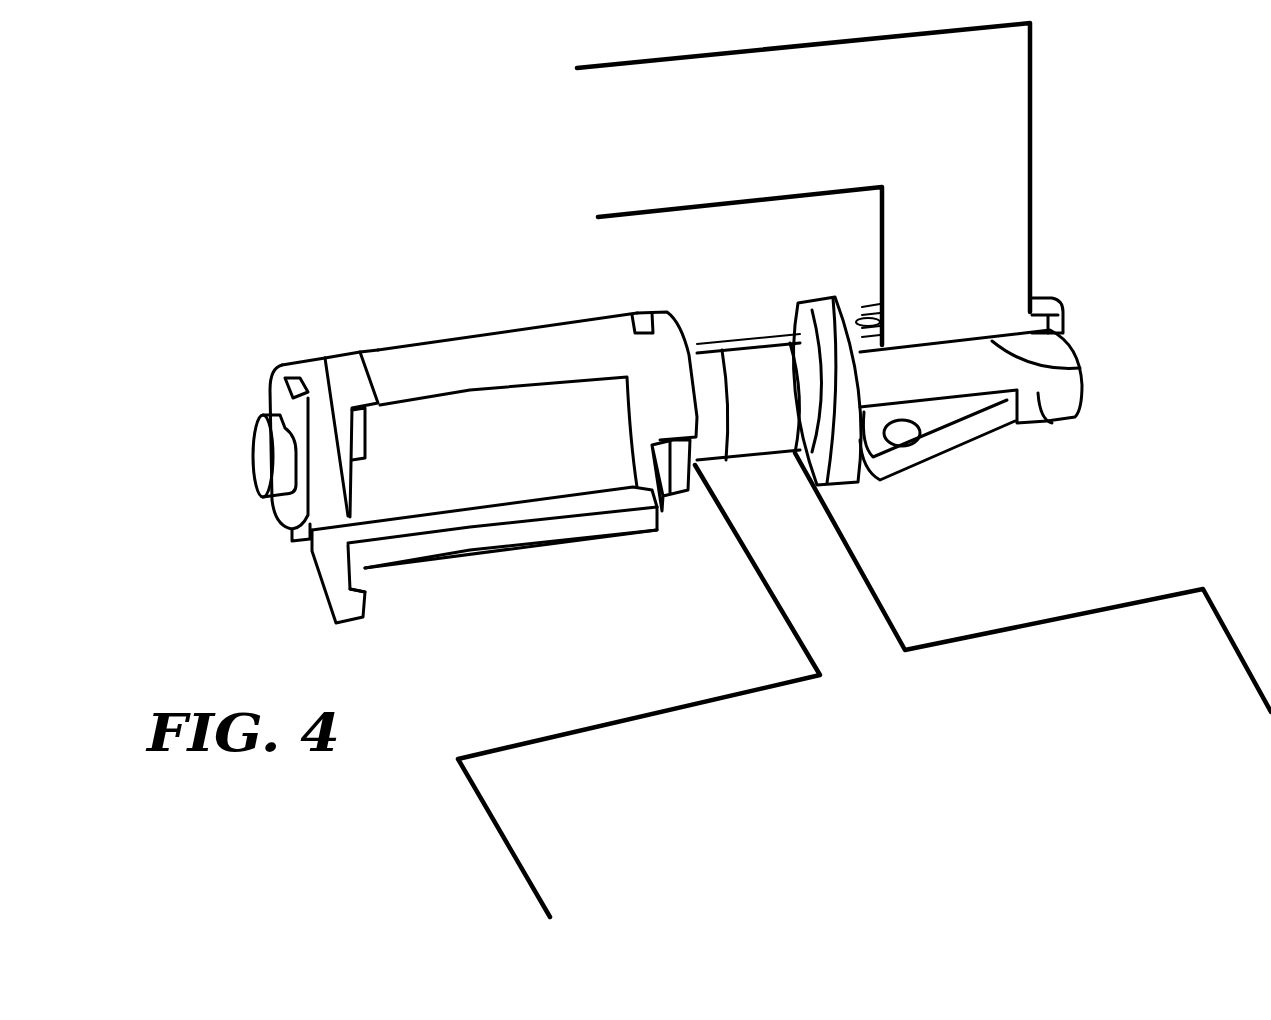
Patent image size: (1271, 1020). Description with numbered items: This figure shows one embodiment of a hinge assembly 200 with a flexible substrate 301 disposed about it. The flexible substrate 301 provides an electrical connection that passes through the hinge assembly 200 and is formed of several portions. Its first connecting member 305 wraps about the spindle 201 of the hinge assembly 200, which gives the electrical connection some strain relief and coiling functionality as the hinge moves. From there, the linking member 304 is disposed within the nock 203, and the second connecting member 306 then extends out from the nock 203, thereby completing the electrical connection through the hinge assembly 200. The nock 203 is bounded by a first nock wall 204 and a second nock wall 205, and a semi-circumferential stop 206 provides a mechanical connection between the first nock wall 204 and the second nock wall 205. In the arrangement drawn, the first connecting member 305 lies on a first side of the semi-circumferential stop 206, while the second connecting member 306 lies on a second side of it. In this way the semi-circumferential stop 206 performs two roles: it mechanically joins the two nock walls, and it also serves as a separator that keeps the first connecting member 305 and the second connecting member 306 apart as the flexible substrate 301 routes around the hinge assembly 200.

The hinge assembly 200 is at (335, 310).
The spindle 201 is at (970, 463).
The nock 203 is at (995, 340).
The first nock wall 204 is at (1040, 393).
The second nock wall 205 is at (1040, 297).
The semi-circumferential stop 206 is at (848, 462).
The flexible substrate 301 is at (455, 815).
The linking member 304 is at (870, 335).
The first connecting member 305 is at (772, 540).
The second connecting member 306 is at (993, 237).